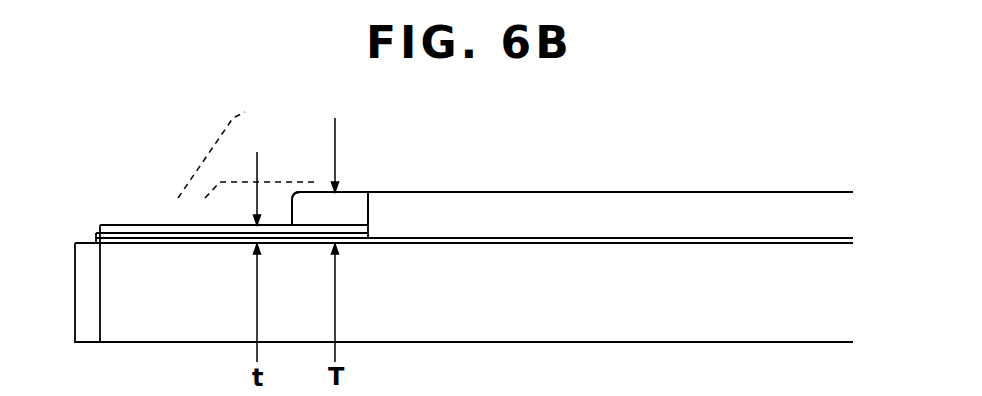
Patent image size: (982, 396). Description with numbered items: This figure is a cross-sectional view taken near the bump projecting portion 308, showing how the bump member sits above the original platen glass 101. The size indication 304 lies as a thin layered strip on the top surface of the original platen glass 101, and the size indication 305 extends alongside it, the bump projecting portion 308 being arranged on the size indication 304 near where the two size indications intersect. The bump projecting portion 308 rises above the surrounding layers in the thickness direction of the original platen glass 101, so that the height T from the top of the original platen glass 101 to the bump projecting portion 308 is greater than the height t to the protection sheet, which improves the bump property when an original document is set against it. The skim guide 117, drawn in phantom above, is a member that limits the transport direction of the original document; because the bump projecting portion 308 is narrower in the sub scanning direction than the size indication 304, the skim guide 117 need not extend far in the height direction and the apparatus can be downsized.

The original platen glass 101 is at (715, 331).
The size indication 304 is at (125, 224).
The size indication 305 is at (718, 194).
The bump projecting portion 308 is at (368, 192).
The skim guide 117 is at (233, 134).